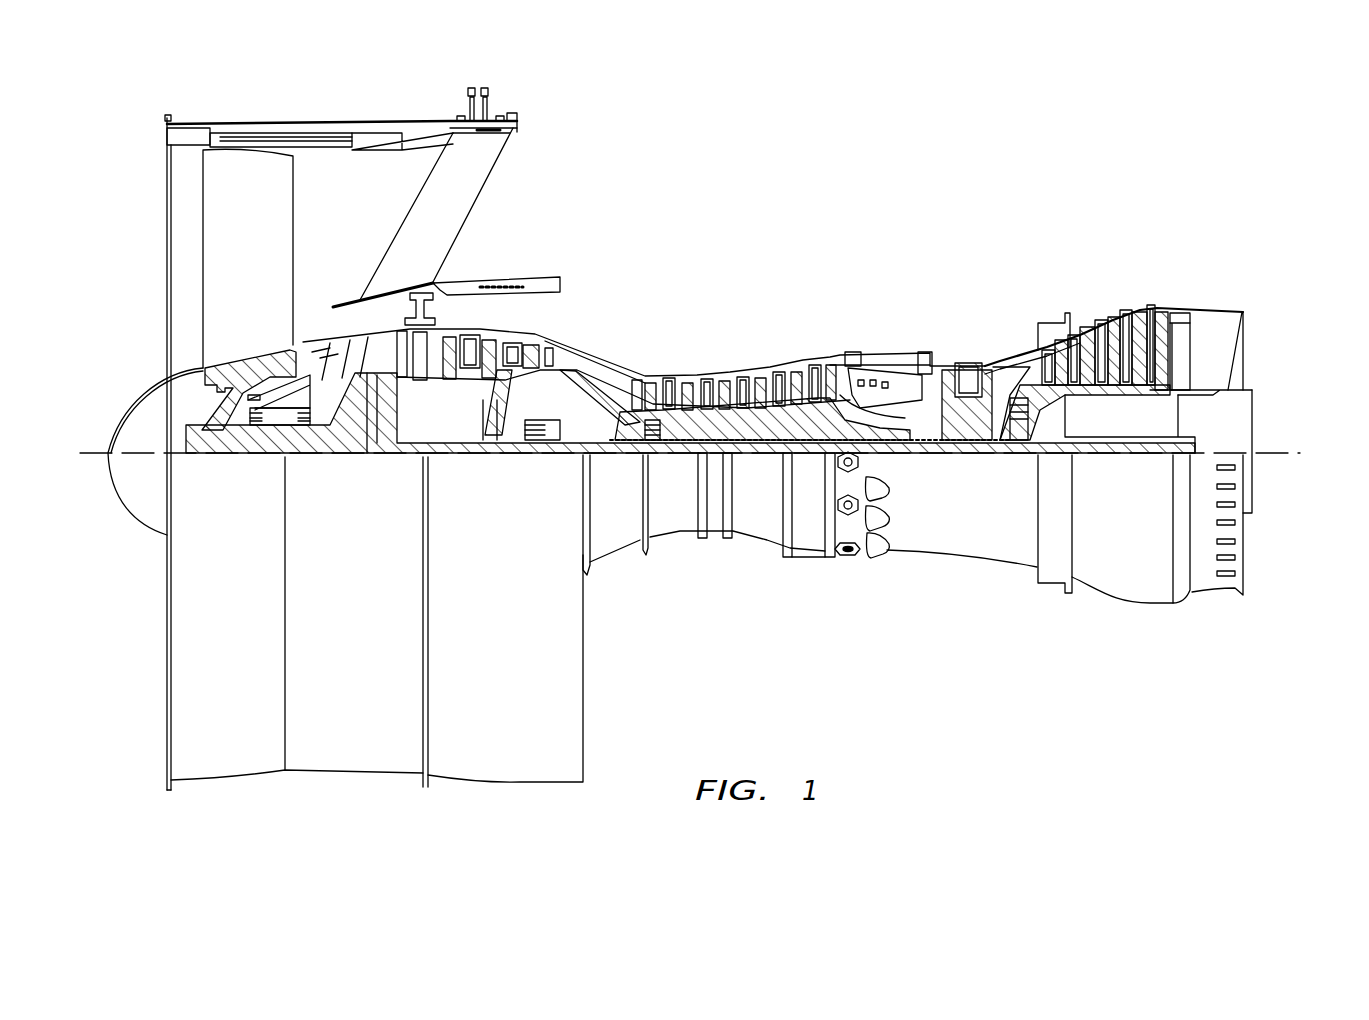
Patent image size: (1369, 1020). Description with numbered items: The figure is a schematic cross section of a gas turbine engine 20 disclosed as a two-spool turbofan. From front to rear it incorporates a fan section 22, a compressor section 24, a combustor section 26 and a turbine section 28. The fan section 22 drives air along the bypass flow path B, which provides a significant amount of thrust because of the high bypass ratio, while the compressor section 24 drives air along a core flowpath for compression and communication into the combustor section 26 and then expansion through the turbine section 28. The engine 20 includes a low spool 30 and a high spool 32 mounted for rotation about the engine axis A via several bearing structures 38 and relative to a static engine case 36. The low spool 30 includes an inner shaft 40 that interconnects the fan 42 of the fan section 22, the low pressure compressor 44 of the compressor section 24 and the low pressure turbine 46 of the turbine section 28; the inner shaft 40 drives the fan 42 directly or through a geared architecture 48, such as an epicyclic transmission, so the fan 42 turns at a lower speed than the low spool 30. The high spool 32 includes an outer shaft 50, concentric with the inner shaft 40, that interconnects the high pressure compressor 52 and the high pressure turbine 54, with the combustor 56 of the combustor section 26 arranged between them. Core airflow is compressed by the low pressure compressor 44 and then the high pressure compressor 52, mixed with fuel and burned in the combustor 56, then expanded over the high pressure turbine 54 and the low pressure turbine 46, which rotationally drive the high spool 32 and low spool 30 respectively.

The gas turbine engine 20 is at (929, 168).
The fan section 22 is at (420, 103).
The compressor section 24 is at (432, 258).
The combustor section 26 is at (948, 258).
The turbine section 28 is at (1185, 258).
The low spool 30 is at (765, 455).
The high spool 32 is at (805, 420).
The static engine case 36 is at (810, 558).
The bearing structures 38 is at (310, 458).
The inner shaft 40 is at (682, 462).
The fan 42 is at (267, 301).
The low pressure compressor 44 is at (507, 343).
The low pressure turbine 46 is at (1115, 340).
The geared architecture 48 is at (375, 460).
The outer shaft 50 is at (898, 456).
The high pressure compressor 52 is at (745, 395).
The high pressure turbine 54 is at (965, 360).
The combustor 56 is at (893, 386).
The engine axis A is at (1298, 462).
The bypass flow path B is at (350, 212).